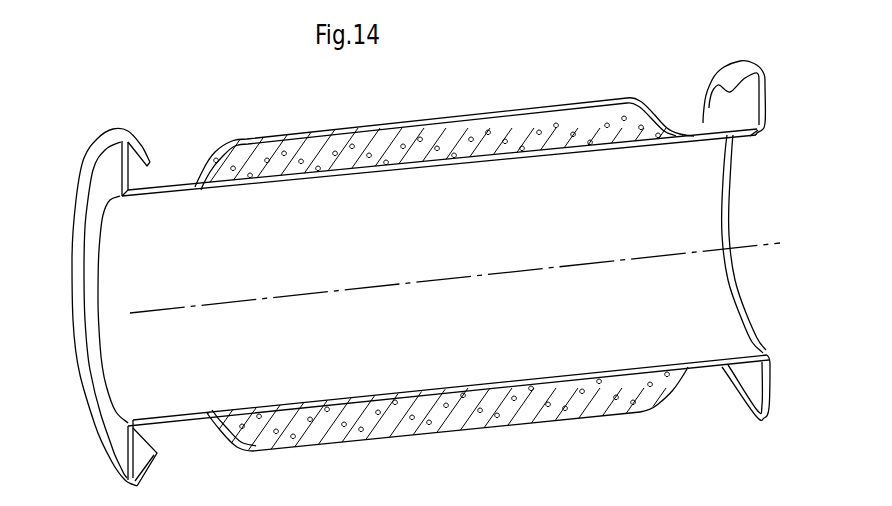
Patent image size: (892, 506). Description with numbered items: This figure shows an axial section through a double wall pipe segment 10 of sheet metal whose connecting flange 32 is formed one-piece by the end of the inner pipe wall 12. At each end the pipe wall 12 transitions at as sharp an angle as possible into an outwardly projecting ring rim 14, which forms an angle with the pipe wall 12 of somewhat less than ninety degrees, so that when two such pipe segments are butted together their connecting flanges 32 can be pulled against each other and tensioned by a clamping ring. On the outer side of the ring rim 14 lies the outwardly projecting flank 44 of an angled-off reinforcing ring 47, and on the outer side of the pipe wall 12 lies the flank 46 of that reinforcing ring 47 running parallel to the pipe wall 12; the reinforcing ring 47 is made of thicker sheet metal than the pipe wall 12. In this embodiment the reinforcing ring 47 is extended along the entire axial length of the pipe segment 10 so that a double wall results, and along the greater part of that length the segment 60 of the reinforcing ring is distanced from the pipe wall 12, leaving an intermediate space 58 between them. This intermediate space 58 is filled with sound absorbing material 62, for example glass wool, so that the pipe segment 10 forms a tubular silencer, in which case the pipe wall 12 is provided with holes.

The pipe segment 10 is at (233, 199).
The pipe wall 12 is at (280, 187).
The ring rim 14 is at (125, 155).
The connecting flange 32 is at (118, 192).
The outwardly projecting flank 44 is at (123, 182).
The flank running parallel to the pipe wall 46 is at (182, 185).
The reinforcing ring 47 is at (161, 184).
The intermediate space 58 is at (555, 105).
The segment of the reinforcing ring 60 is at (480, 113).
The sound absorbing material 62 is at (640, 100).